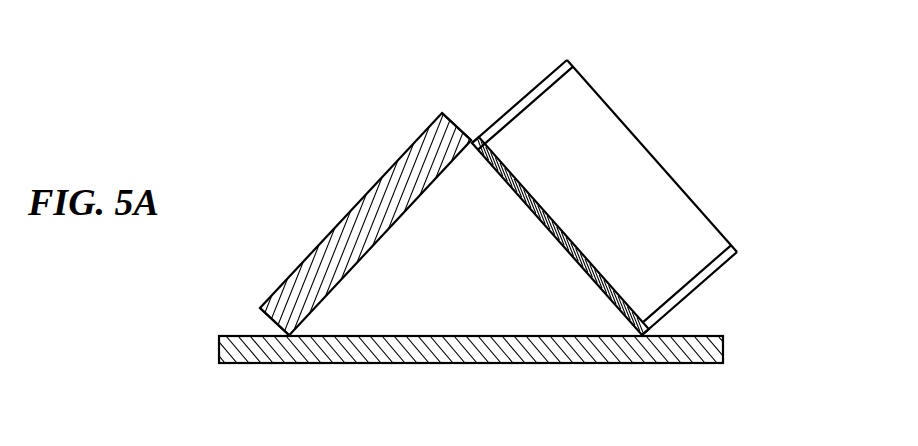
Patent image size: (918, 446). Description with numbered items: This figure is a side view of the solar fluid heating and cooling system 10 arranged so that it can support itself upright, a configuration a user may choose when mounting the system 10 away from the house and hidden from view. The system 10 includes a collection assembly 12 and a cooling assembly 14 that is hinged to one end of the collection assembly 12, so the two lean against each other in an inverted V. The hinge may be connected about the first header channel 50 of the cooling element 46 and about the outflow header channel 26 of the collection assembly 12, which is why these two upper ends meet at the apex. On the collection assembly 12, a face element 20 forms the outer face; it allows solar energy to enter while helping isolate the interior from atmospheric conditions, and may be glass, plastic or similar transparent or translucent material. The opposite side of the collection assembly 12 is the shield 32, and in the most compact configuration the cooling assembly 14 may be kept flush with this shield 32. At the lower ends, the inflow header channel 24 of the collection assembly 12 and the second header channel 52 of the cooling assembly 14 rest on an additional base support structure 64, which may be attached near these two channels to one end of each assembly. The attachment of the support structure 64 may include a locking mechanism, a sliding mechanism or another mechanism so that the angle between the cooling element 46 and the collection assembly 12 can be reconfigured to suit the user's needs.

The system 10 is at (452, 55).
The collection assembly 12 is at (626, 88).
The cooling assembly 14 is at (343, 160).
The face element 20 is at (659, 161).
The inflow header channel 24 is at (735, 248).
The outflow header channel 26 is at (569, 58).
The shield 32 is at (620, 314).
The cooling element 46 is at (331, 230).
The first header channel 50 is at (441, 115).
The second header channel 52 is at (263, 306).
The additional base support structure 64 is at (258, 355).